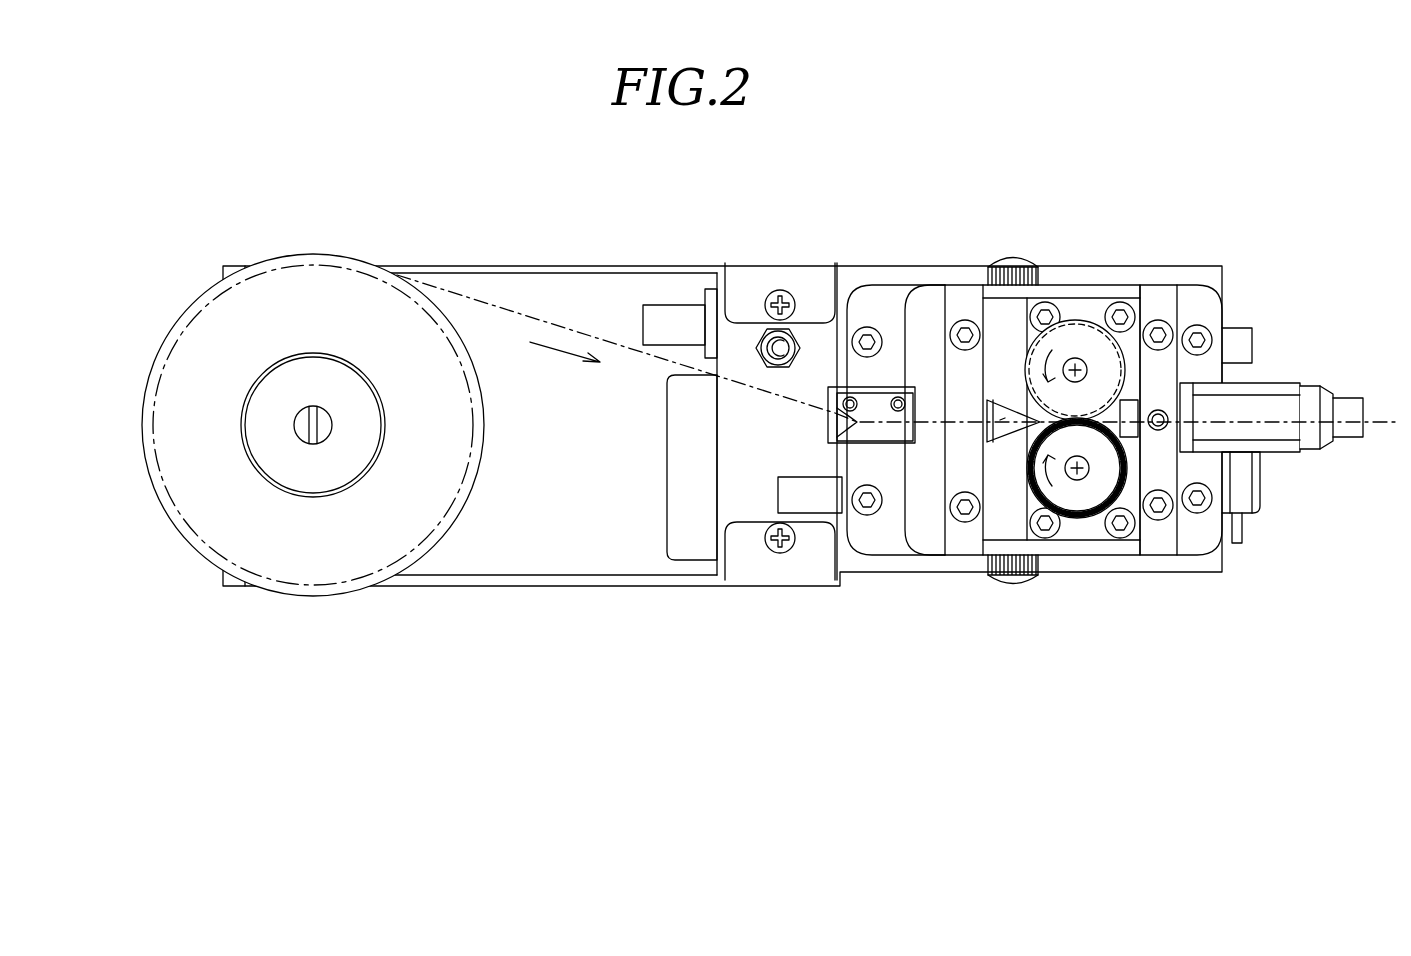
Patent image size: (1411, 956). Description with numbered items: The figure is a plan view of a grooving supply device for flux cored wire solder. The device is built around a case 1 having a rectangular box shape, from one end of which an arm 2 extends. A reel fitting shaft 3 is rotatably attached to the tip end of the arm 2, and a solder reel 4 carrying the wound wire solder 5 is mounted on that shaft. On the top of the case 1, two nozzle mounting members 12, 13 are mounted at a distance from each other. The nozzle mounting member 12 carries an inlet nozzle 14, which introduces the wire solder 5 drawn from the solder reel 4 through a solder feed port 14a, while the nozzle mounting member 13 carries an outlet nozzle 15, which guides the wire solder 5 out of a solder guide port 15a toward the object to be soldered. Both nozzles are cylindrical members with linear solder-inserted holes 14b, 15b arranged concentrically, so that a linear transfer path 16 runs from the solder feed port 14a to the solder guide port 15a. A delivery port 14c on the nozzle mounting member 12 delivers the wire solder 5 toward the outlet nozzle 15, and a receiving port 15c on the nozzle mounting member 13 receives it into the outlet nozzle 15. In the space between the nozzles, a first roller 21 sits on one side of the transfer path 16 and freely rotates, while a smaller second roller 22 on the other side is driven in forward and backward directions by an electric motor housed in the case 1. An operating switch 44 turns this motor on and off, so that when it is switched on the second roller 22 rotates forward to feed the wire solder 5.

The case 1 is at (872, 266).
The arm 2 is at (511, 292).
The reel fitting shaft 3 is at (278, 401).
The solder reel 4 is at (188, 543).
The wire solder 5 is at (554, 331).
The nozzle mounting member 12 is at (960, 298).
The nozzle mounting member 13 is at (1157, 300).
The inlet nozzle 14 is at (866, 438).
The solder feed port 14a is at (826, 426).
The solder-inserted hole 14b is at (930, 424).
The delivery port 14c is at (1007, 438).
The outlet nozzle 15 is at (1268, 395).
The solder guide port 15a is at (1355, 405).
The solder-inserted hole 15b is at (1283, 428).
The receiving port 15c is at (1133, 407).
The transfer path 16 is at (1120, 305).
The first roller 21 is at (1077, 318).
The second roller 22 is at (1080, 522).
The operating switch 44 is at (781, 346).